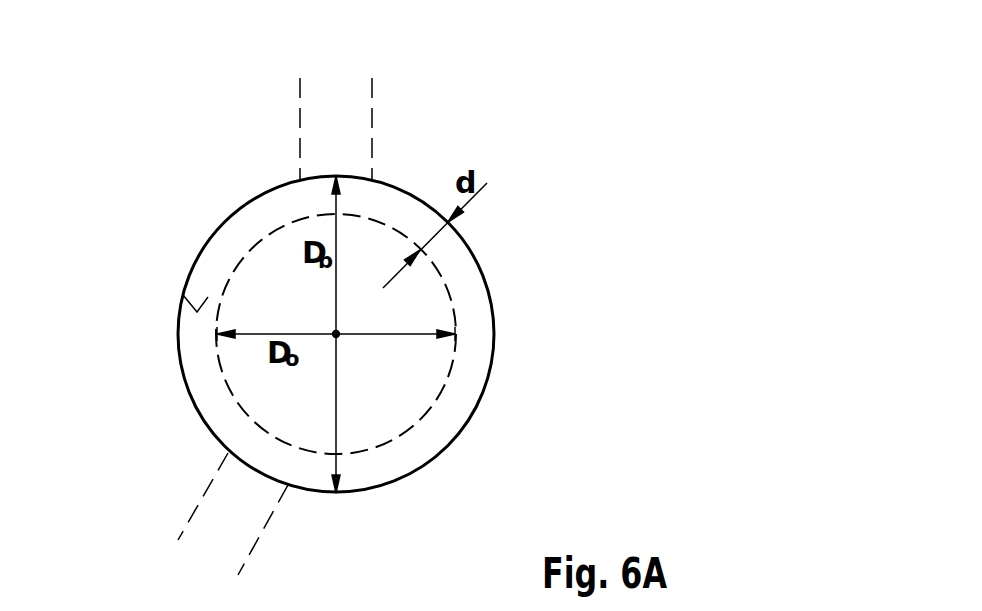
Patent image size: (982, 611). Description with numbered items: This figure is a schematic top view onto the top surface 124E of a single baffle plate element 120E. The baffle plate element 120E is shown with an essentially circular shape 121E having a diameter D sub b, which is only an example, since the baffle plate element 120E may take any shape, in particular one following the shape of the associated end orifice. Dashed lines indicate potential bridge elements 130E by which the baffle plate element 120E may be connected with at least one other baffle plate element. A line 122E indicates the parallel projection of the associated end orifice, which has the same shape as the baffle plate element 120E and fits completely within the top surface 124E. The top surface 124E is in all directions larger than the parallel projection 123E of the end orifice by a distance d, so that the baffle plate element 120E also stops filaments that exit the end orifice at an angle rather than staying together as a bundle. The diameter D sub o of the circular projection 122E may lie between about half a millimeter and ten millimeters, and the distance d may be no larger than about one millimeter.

The baffle plate element 120E is at (444, 104).
The circular shape 121E is at (480, 405).
The parallel projection of the end orifice 122E is at (446, 281).
The parallel projection of the associated end orifice 123E is at (336, 334).
The top surface 124E is at (183, 295).
The bridge element 130E is at (300, 117).